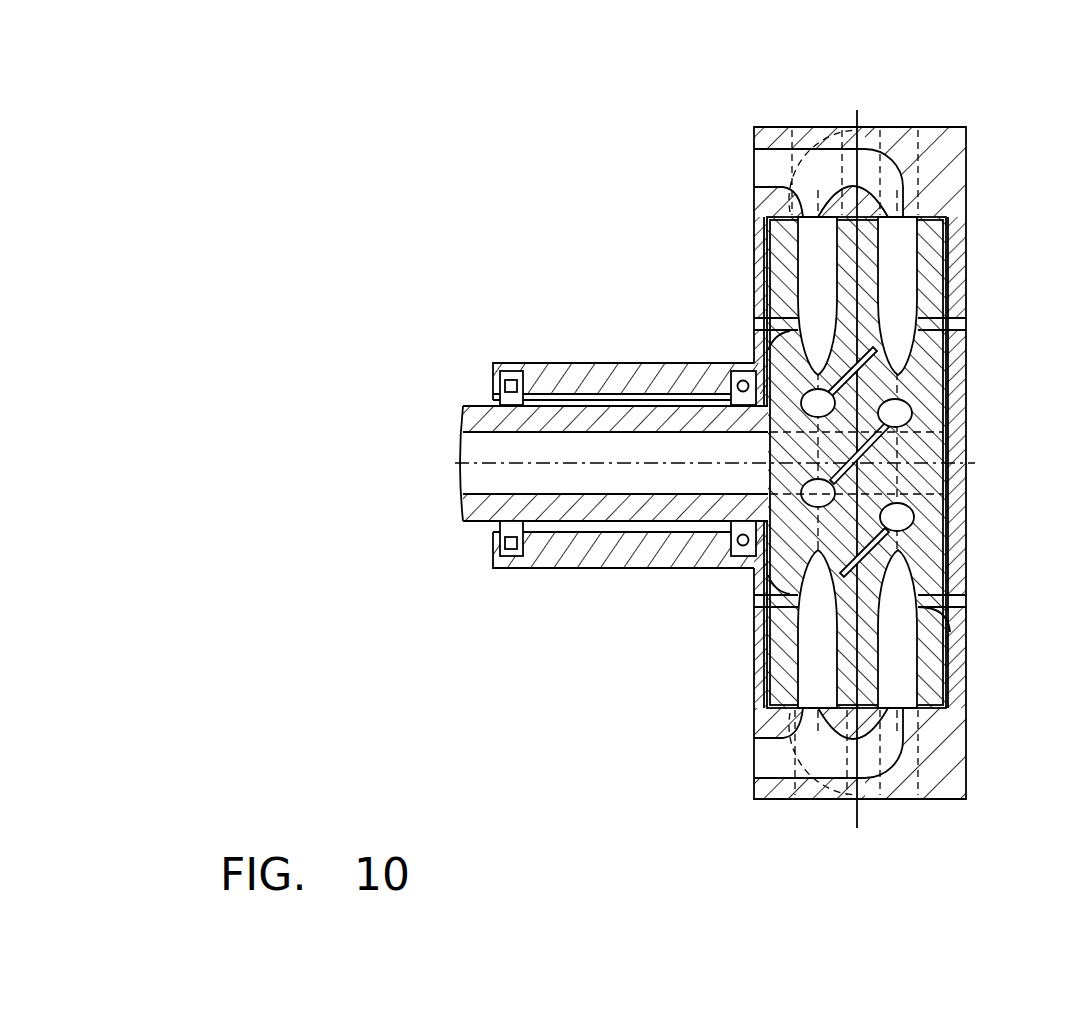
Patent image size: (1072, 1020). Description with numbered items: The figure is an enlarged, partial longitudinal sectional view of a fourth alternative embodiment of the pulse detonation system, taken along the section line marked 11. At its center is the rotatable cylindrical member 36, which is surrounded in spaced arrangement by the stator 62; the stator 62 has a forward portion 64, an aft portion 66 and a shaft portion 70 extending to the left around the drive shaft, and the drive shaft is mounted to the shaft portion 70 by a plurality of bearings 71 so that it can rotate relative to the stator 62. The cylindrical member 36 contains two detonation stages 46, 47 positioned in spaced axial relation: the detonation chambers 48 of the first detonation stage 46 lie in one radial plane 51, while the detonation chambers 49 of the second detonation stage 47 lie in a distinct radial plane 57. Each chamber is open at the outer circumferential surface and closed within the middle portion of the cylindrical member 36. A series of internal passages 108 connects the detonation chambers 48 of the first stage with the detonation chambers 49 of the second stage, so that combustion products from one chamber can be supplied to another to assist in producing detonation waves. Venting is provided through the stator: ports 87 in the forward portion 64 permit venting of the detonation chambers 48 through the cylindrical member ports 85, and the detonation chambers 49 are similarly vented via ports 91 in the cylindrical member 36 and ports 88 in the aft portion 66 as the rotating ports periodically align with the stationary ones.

The section line 11- 11 is at (905, 52).
The stator 62 is at (952, 122).
The rotatable cylindrical member 36 is at (958, 212).
The detonation stage 46 is at (786, 258).
The detonation stage 47 is at (924, 252).
The detonation chambers 48 is at (786, 292).
The detonation chambers 49 is at (928, 296).
The internal passages 108 is at (912, 403).
The radial plane 57 is at (945, 452).
The aft portion 66 is at (955, 522).
The forward portion 64 is at (762, 676).
The ports 87 is at (760, 598).
The cylindrical member ports 85 is at (758, 632).
The ports 88 is at (950, 601).
The ports 91 is at (948, 625).
The shaft portion 70 is at (636, 570).
The radial plane 51 is at (770, 452).
The bearings 71 is at (511, 371).